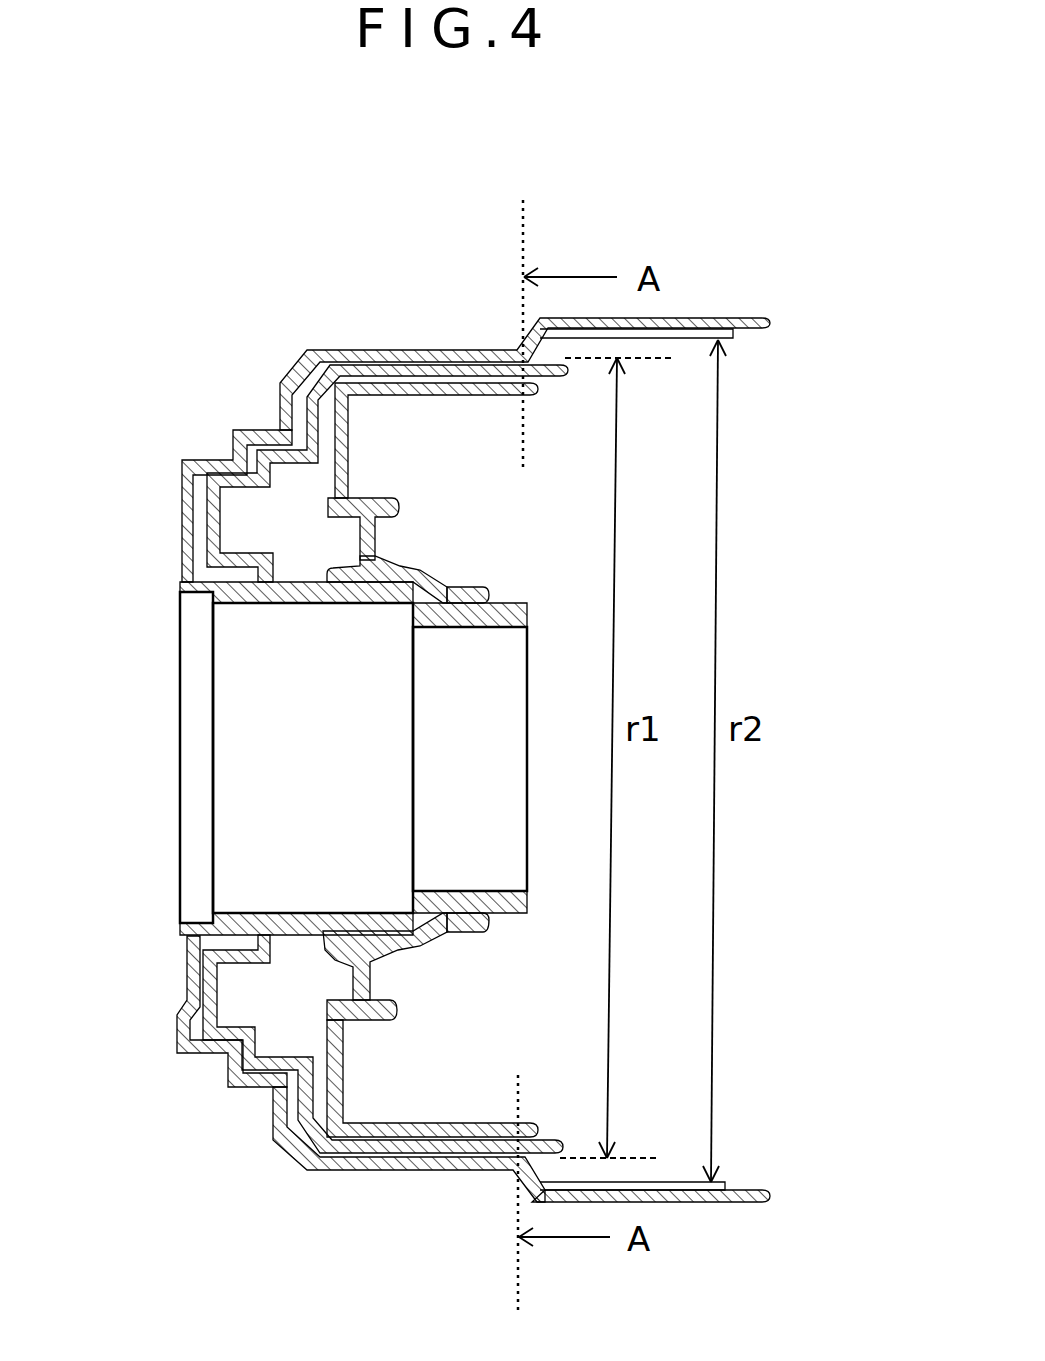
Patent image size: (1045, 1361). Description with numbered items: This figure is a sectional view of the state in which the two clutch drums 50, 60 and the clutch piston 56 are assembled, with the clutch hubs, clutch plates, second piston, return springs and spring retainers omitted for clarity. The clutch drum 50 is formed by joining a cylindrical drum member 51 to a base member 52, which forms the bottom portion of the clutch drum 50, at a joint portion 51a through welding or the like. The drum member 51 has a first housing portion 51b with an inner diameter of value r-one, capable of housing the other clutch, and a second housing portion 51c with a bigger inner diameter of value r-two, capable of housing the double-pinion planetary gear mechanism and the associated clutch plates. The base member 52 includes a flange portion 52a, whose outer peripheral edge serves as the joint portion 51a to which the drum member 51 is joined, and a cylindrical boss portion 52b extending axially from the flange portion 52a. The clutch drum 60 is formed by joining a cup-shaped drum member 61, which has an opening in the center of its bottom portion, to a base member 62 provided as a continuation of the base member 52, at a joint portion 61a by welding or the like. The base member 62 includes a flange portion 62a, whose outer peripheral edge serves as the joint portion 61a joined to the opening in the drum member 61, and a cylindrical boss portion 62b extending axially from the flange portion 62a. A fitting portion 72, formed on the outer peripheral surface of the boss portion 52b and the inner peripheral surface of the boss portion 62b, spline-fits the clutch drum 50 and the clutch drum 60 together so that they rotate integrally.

The clutch drum 50 is at (440, 326).
The drum member 51 is at (336, 346).
The joint portion 51a is at (227, 1074).
The first housing portion 51b is at (415, 1073).
The second housing portion 51c is at (660, 1092).
The base member 52 is at (190, 572).
The flange portion 52a is at (183, 505).
The boss portion 52b is at (463, 628).
The clutch piston 56 is at (270, 604).
The clutch drum 60 is at (510, 477).
The drum member 61 is at (441, 398).
The joint portion 61a is at (327, 1017).
The base member 62 is at (386, 502).
The flange portion 62a is at (378, 532).
The boss portion 62b is at (471, 588).
The fitting portion 72 is at (491, 916).